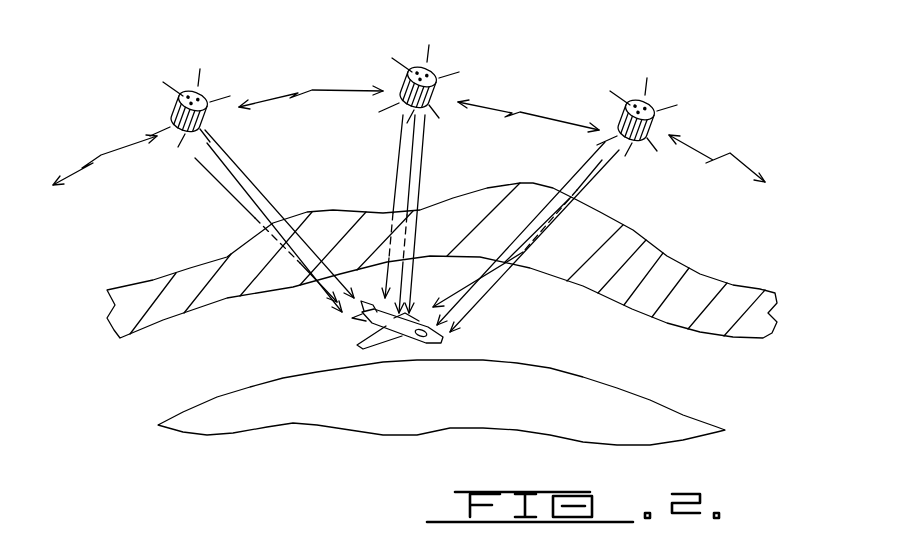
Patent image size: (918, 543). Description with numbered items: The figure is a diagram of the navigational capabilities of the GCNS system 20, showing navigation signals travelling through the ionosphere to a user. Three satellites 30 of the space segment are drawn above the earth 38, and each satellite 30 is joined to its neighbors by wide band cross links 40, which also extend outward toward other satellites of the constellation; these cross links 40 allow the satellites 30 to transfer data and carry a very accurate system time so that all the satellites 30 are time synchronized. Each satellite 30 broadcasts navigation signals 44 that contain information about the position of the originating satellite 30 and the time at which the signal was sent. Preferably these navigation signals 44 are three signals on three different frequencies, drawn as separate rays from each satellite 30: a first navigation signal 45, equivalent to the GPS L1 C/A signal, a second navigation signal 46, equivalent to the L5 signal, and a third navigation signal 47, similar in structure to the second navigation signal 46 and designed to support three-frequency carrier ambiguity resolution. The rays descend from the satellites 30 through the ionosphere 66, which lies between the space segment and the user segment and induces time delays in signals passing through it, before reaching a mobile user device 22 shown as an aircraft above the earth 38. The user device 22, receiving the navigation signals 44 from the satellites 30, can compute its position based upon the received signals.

The GCNS system 20 is at (598, 68).
The mobile user device 22 is at (443, 340).
The satellite 30 is at (203, 92).
The earth 38 is at (616, 393).
The wide band cross link 40 is at (80, 165).
The navigation signal 44 is at (257, 165).
The first navigation signal 45 is at (262, 192).
The second navigation signal 46 is at (224, 166).
The third navigation signal 47 is at (241, 206).
The ionosphere 66 is at (686, 270).